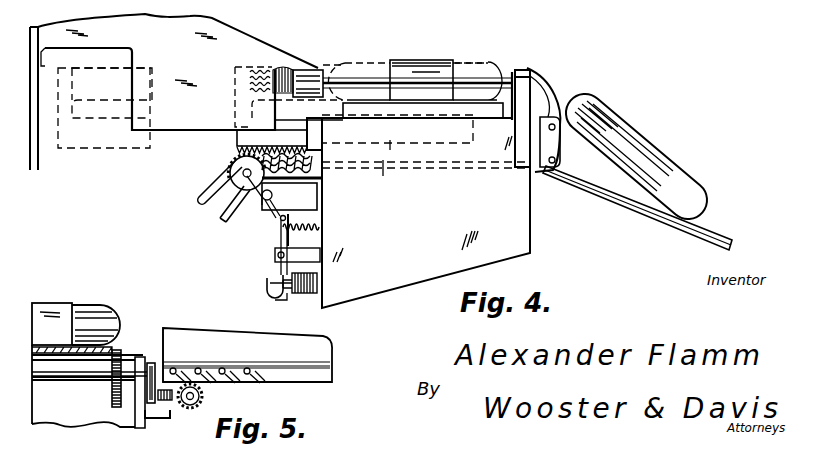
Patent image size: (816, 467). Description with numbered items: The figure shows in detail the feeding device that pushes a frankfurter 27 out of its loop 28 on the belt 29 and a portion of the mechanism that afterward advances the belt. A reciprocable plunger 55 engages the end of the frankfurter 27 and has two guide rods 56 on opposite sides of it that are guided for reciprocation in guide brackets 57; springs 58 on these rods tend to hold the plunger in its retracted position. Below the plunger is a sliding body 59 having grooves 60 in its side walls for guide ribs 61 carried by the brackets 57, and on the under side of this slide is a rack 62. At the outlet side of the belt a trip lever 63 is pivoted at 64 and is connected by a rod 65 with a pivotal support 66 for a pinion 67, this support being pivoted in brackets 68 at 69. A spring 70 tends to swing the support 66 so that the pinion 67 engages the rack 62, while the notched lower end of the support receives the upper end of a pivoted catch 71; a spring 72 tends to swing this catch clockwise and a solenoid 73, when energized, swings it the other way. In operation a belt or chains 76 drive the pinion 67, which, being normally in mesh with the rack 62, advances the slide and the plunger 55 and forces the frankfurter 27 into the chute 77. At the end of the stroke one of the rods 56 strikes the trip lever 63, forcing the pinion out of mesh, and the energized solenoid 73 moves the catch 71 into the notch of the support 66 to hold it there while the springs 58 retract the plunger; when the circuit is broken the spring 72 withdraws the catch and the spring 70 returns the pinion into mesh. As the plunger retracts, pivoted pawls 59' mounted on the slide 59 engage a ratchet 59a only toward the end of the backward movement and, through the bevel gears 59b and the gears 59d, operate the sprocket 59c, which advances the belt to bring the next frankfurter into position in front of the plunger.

In FIG. 4, the frankfurter 27 is at (378, 63).
In FIG. 5, the frankfurter 27 is at (100, 313).
In FIG. 4, the loop 28 is at (448, 62).
In FIG. 5, the belt 29 is at (52, 325).
In FIG. 4, the plunger 55 is at (472, 68).
In FIG. 4, the guide rods 56 is at (425, 80).
In FIG. 4, the guide brackets 57 is at (310, 70).
In FIG. 4, the springs 58 is at (288, 66).
In FIG. 4, the sliding body 59 is at (253, 147).
In FIG. 5, the sliding body 59 is at (262, 367).
In FIG. 5, the pivoted pawls 59' is at (217, 387).
In FIG. 5, the ratchet 59a is at (190, 410).
In FIG. 5, the bevel gears 59b is at (177, 412).
In FIG. 5, the sprocket 59c is at (113, 393).
In FIG. 5, the gears 59d is at (152, 363).
In FIG. 4, the grooves 60 is at (293, 128).
In FIG. 5, the grooves 60 is at (292, 362).
In FIG. 4, the guide ribs 61 is at (187, 136).
In FIG. 4, the rack 62 is at (238, 158).
In FIG. 4, the trip lever 63 is at (541, 91).
In FIG. 4, the pivot 64 is at (560, 134).
In FIG. 4, the rod 65 is at (444, 170).
In FIG. 4, the pivotal support 66 is at (245, 192).
In FIG. 4, the pinion 67 is at (204, 188).
In FIG. 4, the brackets 68 is at (307, 197).
In FIG. 4, the pivot 69 is at (263, 205).
In FIG. 4, the spring 70 is at (323, 177).
In FIG. 4, the pivoted catch 71 is at (275, 249).
In FIG. 4, the spring 72 is at (308, 223).
In FIG. 4, the solenoid 73 is at (317, 285).
In FIG. 4, the belt or chains 76 is at (246, 193).
In FIG. 4, the chute 77 is at (636, 212).